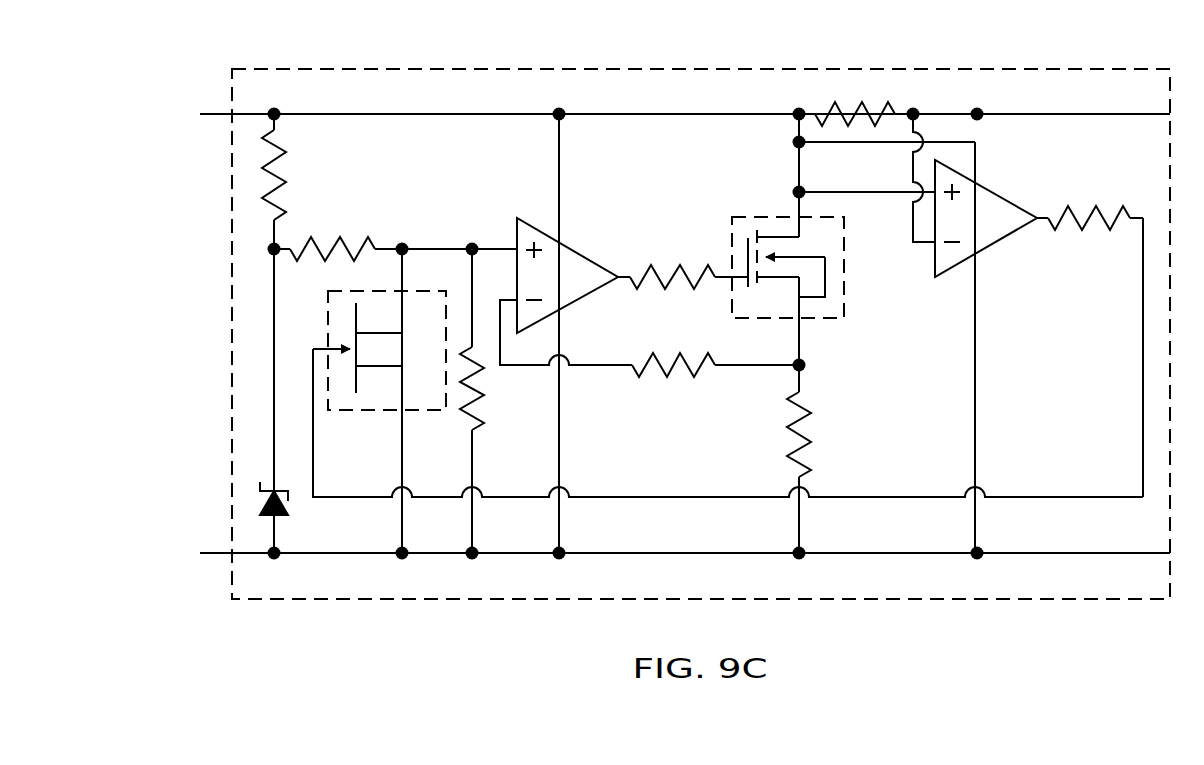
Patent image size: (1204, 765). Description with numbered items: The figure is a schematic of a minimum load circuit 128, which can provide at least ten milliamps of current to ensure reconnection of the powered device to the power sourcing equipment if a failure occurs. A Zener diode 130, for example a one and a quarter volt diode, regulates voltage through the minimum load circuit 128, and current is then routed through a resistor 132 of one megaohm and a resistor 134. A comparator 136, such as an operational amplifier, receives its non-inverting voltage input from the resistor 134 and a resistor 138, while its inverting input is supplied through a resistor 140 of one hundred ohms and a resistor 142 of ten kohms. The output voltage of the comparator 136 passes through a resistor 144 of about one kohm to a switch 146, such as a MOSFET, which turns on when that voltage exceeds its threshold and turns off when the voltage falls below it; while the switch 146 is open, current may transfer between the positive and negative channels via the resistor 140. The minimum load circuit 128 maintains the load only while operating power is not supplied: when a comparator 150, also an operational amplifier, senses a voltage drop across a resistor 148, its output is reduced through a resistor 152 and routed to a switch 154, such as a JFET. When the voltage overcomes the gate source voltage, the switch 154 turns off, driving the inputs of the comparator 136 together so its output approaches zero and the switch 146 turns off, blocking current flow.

The minimum load circuit 128 is at (700, 69).
The Zener diode 130 is at (262, 506).
The resistor 132 is at (297, 156).
The resistor 134 is at (345, 232).
The comparator 136 is at (583, 300).
The resistor 138 is at (488, 405).
The resistor 140 is at (820, 456).
The resistor 142 is at (636, 378).
The resistor 144 is at (640, 250).
The switch 146 is at (845, 272).
The resistor 148 is at (893, 104).
The comparator 150 is at (983, 182).
The resistor 152 is at (1113, 237).
The switch 154 is at (387, 412).